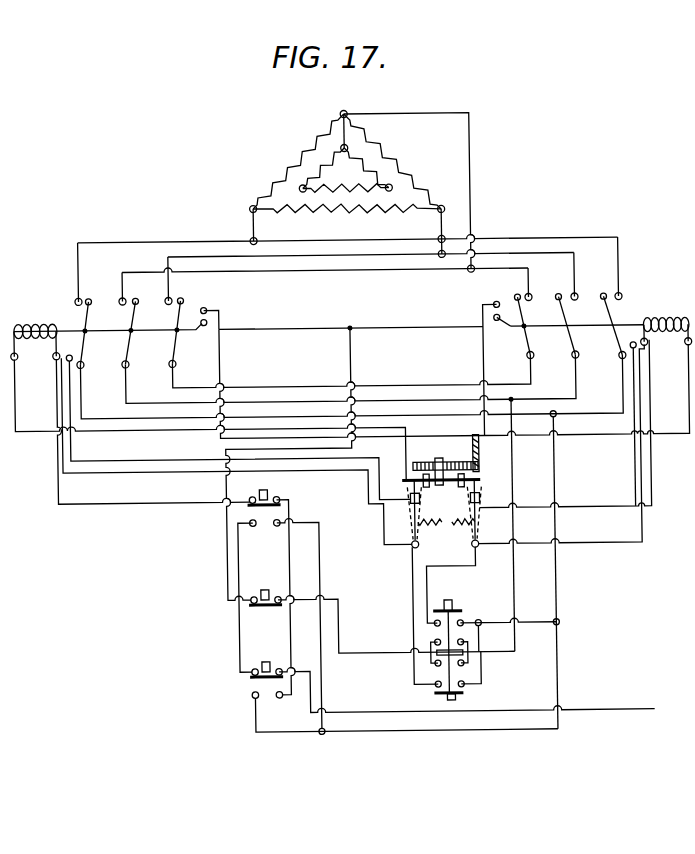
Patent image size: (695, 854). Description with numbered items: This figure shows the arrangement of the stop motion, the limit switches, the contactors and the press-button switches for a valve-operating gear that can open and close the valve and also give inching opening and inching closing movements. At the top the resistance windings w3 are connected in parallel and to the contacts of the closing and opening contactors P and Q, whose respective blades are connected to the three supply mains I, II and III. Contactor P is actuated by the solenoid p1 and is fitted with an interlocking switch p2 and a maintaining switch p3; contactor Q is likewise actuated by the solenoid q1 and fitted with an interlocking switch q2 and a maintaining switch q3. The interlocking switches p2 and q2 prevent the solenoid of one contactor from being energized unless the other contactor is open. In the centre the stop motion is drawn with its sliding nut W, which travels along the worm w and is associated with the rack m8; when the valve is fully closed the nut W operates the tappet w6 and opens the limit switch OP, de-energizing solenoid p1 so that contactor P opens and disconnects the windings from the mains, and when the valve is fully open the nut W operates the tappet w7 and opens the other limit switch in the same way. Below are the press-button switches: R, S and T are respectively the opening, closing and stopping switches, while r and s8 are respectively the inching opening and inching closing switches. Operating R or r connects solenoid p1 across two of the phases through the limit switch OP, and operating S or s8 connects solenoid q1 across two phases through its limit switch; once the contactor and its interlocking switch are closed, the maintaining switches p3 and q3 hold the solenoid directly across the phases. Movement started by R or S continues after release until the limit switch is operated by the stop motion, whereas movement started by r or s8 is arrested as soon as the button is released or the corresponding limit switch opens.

The resistances w3 is at (415, 162).
The solenoid p1 is at (30, 320).
The interlocking switch p2 is at (206, 305).
The maintaining switch p3 is at (77, 357).
The contactor P is at (121, 312).
The solenoid q1 is at (661, 314).
The interlocking switch q2 is at (488, 300).
The maintaining switch q3 is at (615, 361).
The contactor Q is at (560, 345).
The supply main I is at (200, 385).
The supply main II is at (156, 401).
The supply main III is at (110, 416).
The stop motion sliding nut W is at (436, 462).
The worm w is at (479, 468).
The rack m8 is at (479, 449).
The tappet w6 is at (435, 491).
The tappet w7 is at (456, 487).
The limit switch OP is at (408, 516).
The opening press-button switch R is at (268, 494).
The stopping press-button switch T is at (263, 589).
The closing press-button switch S is at (263, 661).
The inching opening press-button switch r is at (440, 599).
The inching closing press-button switch s8 is at (436, 695).